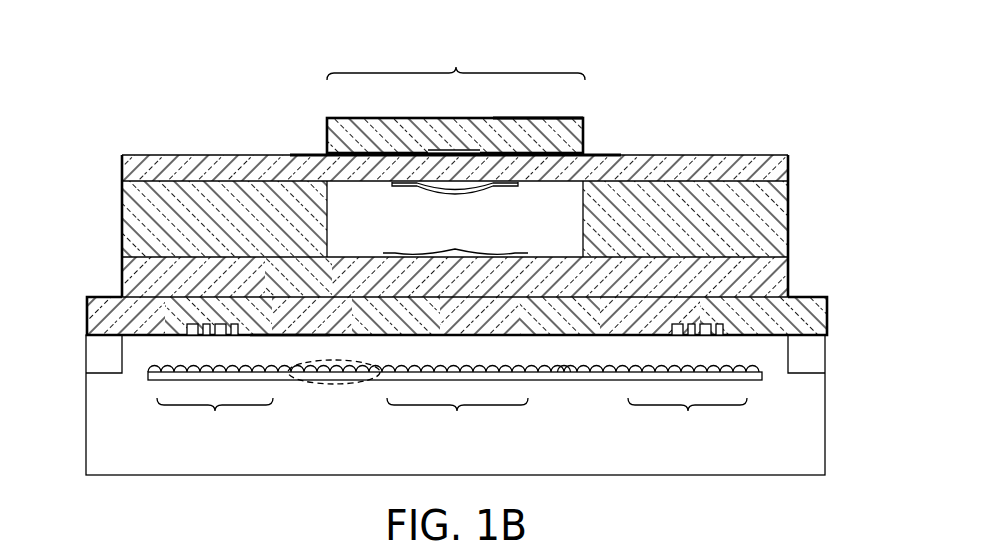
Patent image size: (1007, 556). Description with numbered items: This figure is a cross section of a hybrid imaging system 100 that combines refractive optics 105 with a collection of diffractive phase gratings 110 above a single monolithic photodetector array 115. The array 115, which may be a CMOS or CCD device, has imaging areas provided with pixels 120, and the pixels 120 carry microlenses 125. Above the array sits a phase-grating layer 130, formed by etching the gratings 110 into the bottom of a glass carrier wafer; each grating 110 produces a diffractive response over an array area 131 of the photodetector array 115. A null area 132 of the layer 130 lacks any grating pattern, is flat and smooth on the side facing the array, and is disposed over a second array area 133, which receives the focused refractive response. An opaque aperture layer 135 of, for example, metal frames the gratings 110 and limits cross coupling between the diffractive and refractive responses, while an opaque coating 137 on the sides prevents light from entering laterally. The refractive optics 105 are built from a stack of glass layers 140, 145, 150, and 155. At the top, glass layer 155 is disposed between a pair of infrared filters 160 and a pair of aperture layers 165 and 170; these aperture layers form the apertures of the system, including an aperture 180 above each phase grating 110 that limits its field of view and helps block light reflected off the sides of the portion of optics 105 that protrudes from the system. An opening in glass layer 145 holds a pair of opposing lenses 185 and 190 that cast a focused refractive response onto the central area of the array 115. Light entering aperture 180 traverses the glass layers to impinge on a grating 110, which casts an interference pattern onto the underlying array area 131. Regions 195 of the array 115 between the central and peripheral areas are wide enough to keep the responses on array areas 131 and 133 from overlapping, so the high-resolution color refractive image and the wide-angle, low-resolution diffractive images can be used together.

The hybrid imaging system 100 is at (200, 54).
The refractive optics 105 is at (469, 99).
The phase gratings 110 is at (215, 336).
The photodetector array 115 is at (444, 473).
The pixels 120 is at (537, 381).
The microlenses 125 is at (563, 368).
The phase-grating layer 130 is at (122, 325).
The array area 131 is at (452, 418).
The null area 132 is at (466, 343).
The second array area 133 is at (457, 418).
The opaque aperture layer 135 is at (285, 336).
The opaque coating 137 is at (122, 220).
The glass layer 140 is at (212, 285).
The glass layer 145 is at (212, 228).
The glass layer 150 is at (202, 178).
The glass layer 155 is at (351, 145).
The infrared filters 160 is at (453, 152).
The aperture layer 165 is at (557, 117).
The aperture layer 170 is at (597, 154).
The aperture 180 is at (221, 143).
The lens 185 is at (487, 190).
The lens 190 is at (404, 253).
The regions 195 is at (325, 385).